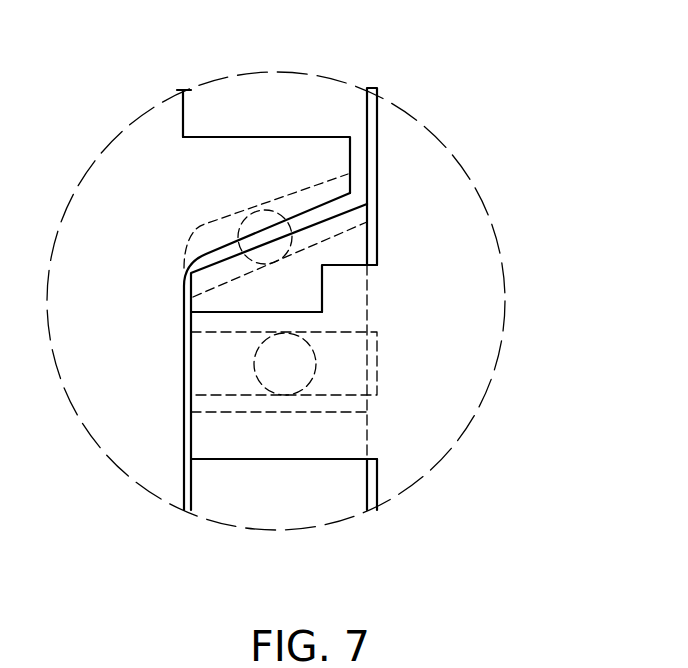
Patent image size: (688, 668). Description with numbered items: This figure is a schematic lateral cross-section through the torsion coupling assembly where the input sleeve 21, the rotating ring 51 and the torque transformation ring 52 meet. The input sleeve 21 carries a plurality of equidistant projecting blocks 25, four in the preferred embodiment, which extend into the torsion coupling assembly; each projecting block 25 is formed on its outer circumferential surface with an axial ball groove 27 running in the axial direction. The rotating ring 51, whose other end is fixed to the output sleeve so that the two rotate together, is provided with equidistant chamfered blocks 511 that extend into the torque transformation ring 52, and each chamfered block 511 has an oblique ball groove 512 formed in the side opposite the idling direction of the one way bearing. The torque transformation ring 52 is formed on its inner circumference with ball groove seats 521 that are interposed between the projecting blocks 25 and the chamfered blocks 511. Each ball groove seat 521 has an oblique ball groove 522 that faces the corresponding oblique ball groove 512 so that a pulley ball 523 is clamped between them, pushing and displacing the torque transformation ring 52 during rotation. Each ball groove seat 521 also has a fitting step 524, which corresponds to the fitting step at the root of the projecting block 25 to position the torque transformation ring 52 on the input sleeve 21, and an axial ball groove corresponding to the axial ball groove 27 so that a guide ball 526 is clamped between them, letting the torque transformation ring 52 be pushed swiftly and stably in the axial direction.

The rotating ring 51 is at (162, 121).
The chamfered block 511 is at (265, 137).
The oblique ball groove 512 is at (197, 227).
The torque transformation ring 52 is at (230, 507).
The ball groove seat 521 is at (355, 247).
The oblique ball groove 522 is at (378, 196).
The pulley ball 523 is at (293, 228).
The fitting step 524 is at (347, 267).
The guide ball 526 is at (318, 363).
The axial ball groove 27 is at (377, 392).
The input sleeve 21 is at (397, 472).
The projecting block 25 is at (315, 443).